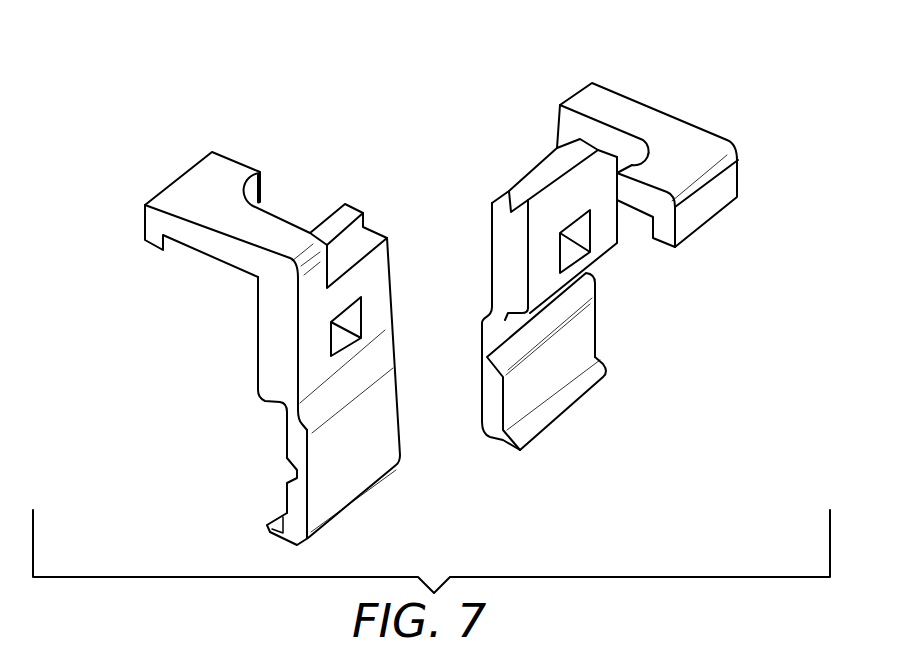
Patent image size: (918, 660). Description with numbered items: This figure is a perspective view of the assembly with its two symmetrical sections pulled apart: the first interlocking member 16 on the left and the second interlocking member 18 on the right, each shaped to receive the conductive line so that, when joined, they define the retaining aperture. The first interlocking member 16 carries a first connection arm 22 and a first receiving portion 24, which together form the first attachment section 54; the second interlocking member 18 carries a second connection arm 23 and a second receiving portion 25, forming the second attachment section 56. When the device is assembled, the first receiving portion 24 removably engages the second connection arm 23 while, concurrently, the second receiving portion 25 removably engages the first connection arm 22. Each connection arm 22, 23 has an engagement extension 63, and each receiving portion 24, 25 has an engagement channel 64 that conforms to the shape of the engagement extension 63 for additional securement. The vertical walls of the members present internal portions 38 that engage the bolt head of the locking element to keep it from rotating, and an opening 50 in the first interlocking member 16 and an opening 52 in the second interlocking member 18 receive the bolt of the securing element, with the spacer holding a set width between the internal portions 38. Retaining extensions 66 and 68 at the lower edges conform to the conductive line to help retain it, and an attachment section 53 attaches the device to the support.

The first interlocking member 16 is at (357, 502).
The second interlocking member 18 is at (492, 250).
The first connection arm 22 is at (212, 260).
The second connection arm 23 is at (655, 110).
The first receiving portion 24 is at (347, 203).
The second receiving portion 25 is at (511, 168).
The internal portion 38 is at (253, 365).
The opening 50 is at (343, 337).
The opening 52 is at (572, 250).
The attachment section 53 is at (237, 292).
The first attachment section 54 is at (206, 410).
The second attachment section 56 is at (607, 86).
The engagement extension 63 is at (148, 248).
The engagement channel 64 is at (369, 237).
The retaining extension 66 is at (273, 535).
The retaining extension 68 is at (293, 473).